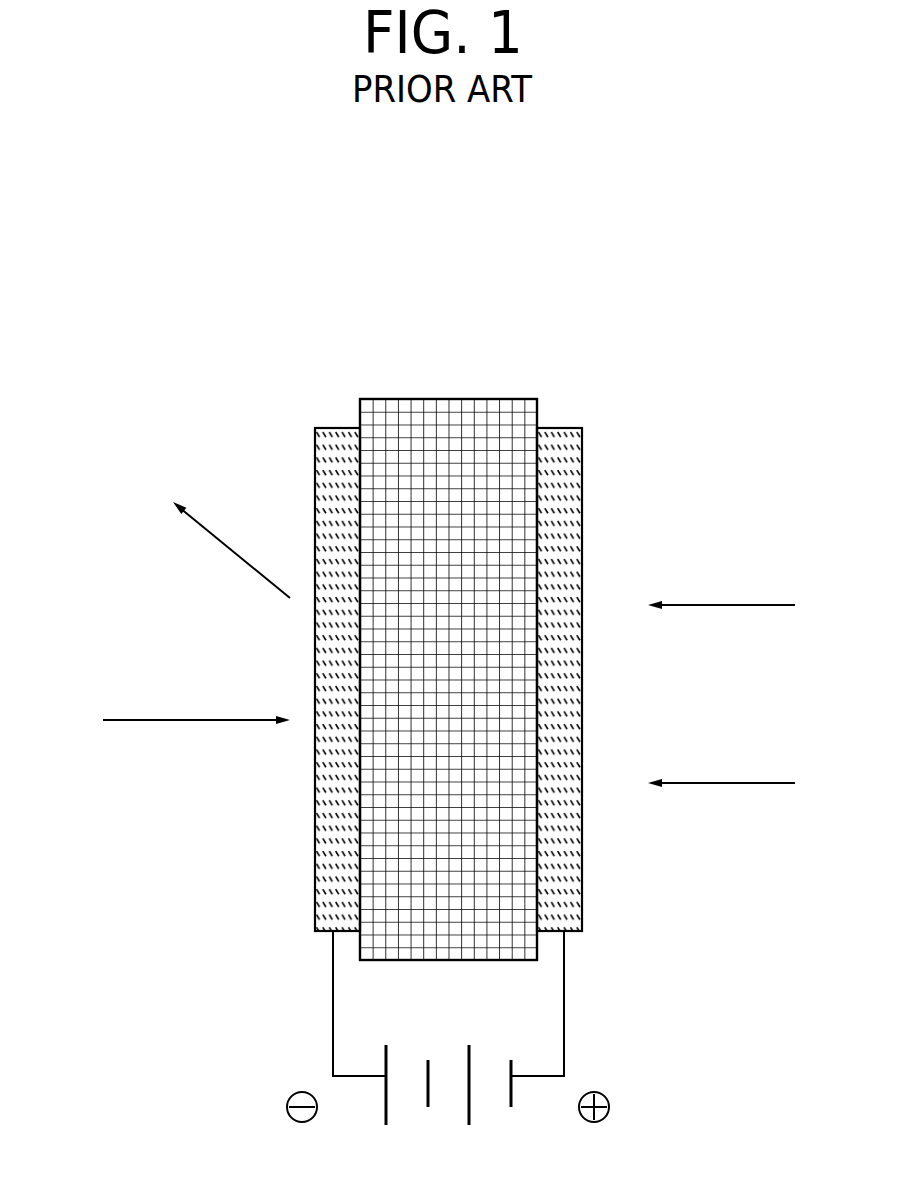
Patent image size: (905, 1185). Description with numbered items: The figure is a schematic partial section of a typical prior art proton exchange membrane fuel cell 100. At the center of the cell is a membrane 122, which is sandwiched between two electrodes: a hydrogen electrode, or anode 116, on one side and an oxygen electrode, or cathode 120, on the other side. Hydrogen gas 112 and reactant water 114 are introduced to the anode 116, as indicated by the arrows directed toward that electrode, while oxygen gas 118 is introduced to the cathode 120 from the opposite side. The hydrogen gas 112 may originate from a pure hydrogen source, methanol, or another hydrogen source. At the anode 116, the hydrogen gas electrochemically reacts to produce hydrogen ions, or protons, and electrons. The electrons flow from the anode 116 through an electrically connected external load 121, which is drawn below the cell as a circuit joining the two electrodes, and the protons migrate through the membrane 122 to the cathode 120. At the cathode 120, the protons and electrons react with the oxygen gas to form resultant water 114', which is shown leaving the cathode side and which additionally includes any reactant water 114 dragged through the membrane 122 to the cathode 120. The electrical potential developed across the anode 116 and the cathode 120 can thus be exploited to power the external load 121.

The proton exchange membrane fuel cell 100 is at (140, 363).
The hydrogen gas 112 is at (740, 605).
The reactant water 114 is at (752, 797).
The resultant water 114' is at (231, 584).
The hydrogen electrode (anode) 116 is at (568, 428).
The oxygen gas 118 is at (192, 720).
The oxygen electrode (cathode) 120 is at (313, 438).
The external load 121 is at (592, 1008).
The membrane 122 is at (443, 398).